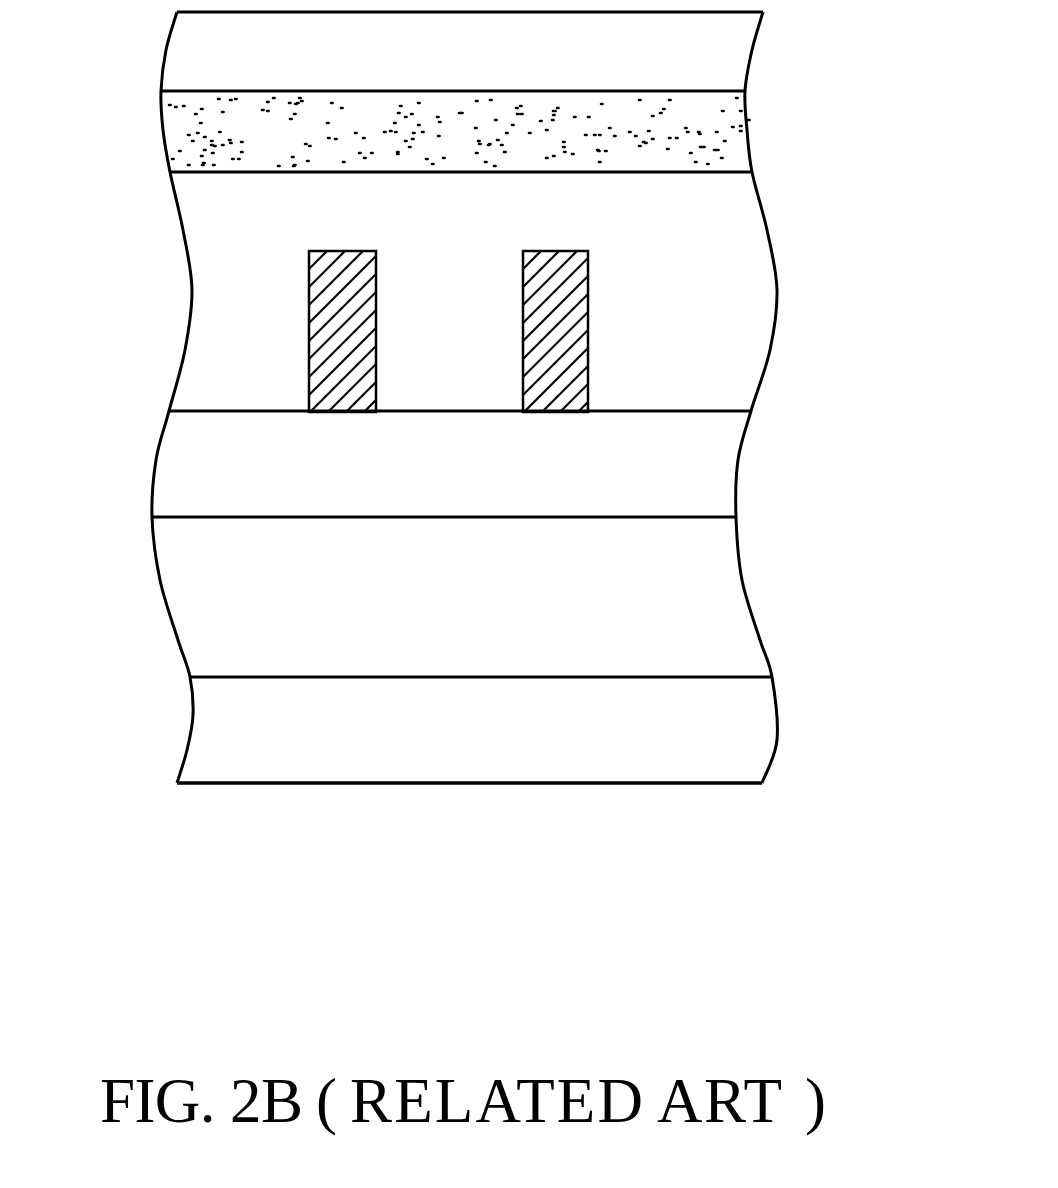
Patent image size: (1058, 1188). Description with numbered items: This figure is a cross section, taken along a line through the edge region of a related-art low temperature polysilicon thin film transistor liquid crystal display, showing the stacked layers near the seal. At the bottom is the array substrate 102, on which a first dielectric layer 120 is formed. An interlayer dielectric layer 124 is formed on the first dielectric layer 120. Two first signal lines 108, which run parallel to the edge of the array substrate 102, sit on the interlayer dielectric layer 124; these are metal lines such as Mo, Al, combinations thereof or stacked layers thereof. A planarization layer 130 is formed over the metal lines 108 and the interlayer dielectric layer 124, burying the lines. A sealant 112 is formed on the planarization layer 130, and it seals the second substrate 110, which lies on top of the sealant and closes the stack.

The array substrate 102 is at (710, 748).
The first dielectric layer 120 is at (710, 588).
The interlayer dielectric layer 124 is at (710, 470).
The planarization layer 130 is at (710, 340).
The first signal lines 108 is at (338, 287).
The sealant 112 is at (712, 137).
The second substrate 110 is at (710, 50).